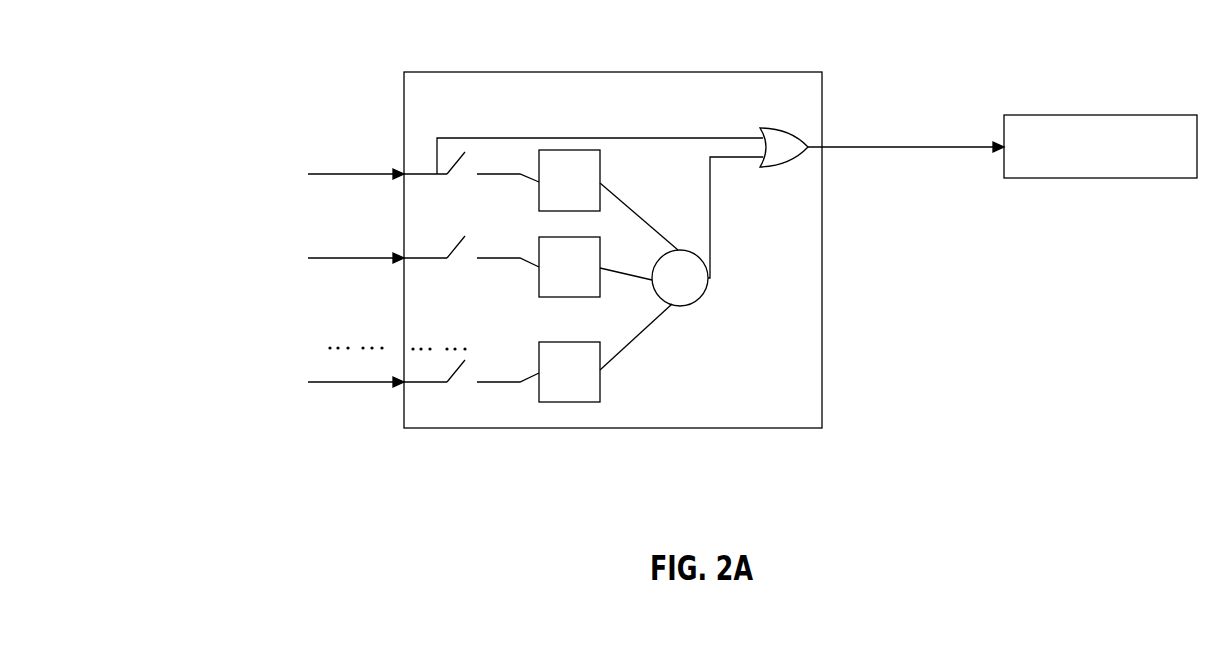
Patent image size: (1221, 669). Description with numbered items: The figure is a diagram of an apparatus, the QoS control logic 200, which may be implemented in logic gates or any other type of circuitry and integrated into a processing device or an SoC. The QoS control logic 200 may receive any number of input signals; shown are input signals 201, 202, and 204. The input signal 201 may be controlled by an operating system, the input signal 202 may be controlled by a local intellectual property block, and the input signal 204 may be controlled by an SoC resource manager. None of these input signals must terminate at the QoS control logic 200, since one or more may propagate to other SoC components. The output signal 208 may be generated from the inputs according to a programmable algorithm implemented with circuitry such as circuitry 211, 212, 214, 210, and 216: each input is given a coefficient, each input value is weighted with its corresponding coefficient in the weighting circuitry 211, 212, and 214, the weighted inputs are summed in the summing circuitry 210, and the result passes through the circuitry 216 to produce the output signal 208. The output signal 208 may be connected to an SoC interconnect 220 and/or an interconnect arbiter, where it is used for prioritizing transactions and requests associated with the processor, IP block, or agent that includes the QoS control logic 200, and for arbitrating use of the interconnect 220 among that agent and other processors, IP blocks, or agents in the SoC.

The QoS control logic 200 is at (698, 102).
The input signal 201 is at (333, 170).
The input signal 202 is at (353, 253).
The input signal 204 is at (352, 382).
The output signal 208 is at (985, 136).
The circuitry 210 is at (745, 310).
The circuitry 211 is at (584, 233).
The circuitry 212 is at (584, 321).
The weight aN 214 is at (584, 425).
The circuitry 216 is at (805, 195).
The interconnect 220 is at (1125, 210).